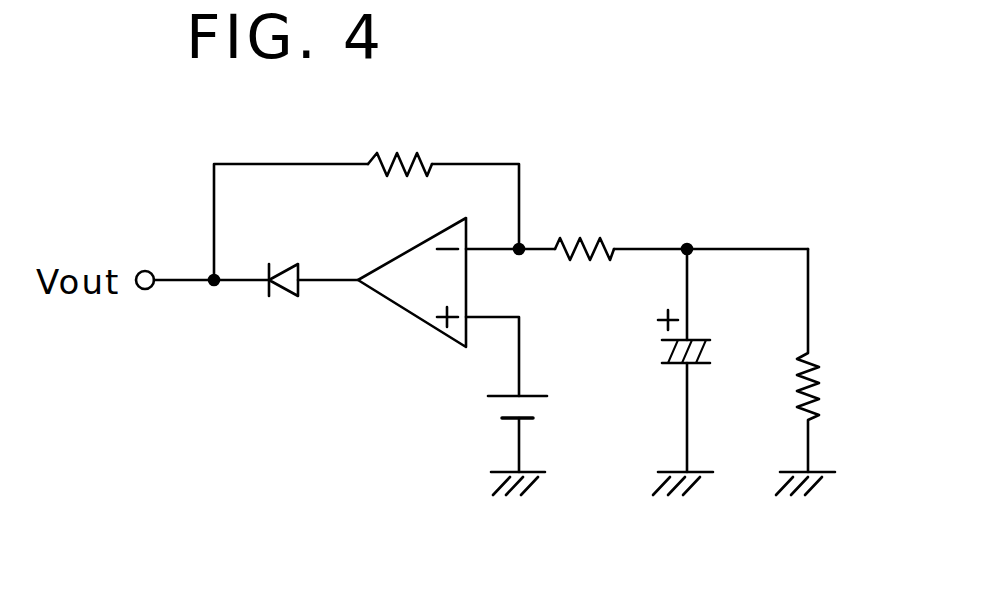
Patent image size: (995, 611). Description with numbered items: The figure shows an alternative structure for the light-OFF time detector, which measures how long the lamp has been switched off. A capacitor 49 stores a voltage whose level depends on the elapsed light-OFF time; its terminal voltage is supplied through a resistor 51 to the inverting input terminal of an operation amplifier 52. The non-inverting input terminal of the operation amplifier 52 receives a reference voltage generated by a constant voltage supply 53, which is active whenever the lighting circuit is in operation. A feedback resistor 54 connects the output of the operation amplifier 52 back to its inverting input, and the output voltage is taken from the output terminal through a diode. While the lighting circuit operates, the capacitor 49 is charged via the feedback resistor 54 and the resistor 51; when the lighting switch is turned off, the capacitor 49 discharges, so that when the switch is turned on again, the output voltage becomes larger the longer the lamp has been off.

The capacitor 49 is at (698, 340).
The resistor 51 is at (602, 240).
The operation amplifier 52 is at (400, 306).
The constant voltage supply 53 is at (535, 396).
The feedback resistor 54 is at (424, 163).